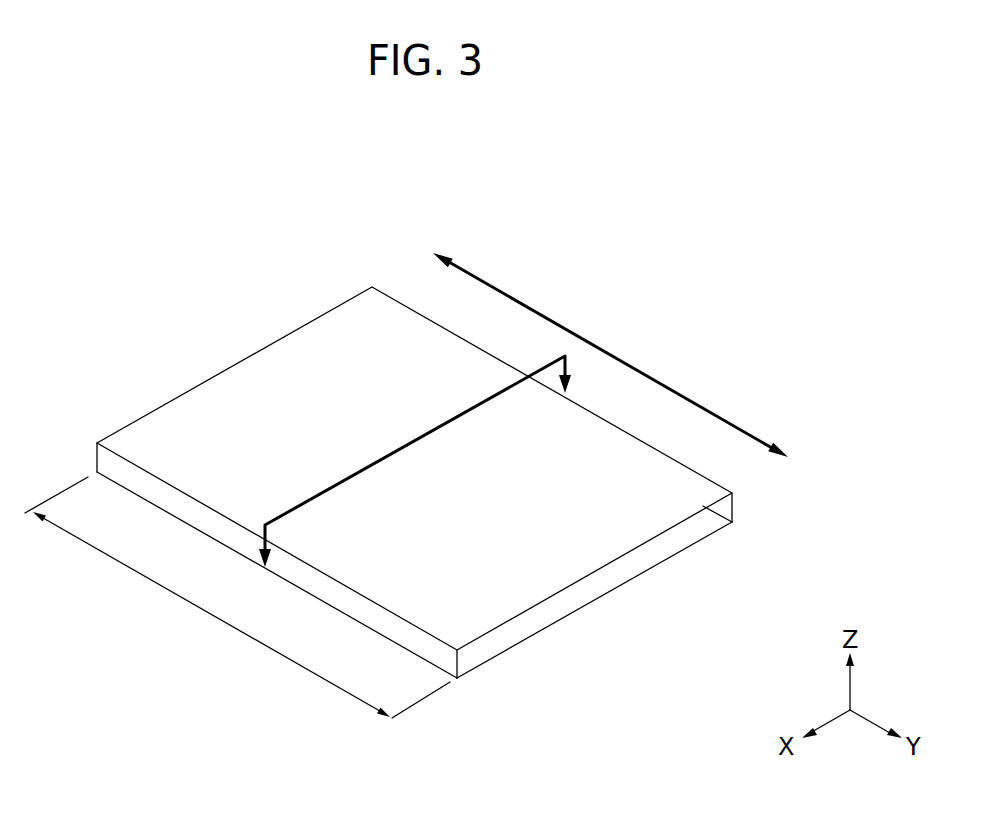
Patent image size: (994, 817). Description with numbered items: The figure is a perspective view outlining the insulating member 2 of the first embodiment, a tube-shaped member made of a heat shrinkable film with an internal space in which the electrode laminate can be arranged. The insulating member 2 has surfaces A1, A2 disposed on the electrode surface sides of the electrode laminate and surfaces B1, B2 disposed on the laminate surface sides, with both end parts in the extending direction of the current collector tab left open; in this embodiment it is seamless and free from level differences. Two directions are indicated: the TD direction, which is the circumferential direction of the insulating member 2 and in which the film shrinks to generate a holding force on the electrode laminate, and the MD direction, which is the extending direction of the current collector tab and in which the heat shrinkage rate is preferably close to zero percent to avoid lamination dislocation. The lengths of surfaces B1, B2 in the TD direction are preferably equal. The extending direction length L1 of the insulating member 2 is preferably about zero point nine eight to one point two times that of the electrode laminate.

The insulating member 2 is at (667, 245).
The surface A1 is at (308, 347).
The surface A2 is at (543, 632).
The surface B1 is at (133, 480).
The surface B2 is at (733, 508).
The MD direction MD is at (545, 313).
The TD direction TD is at (483, 392).
The extending direction length of the current collector tab L1 is at (237, 597).